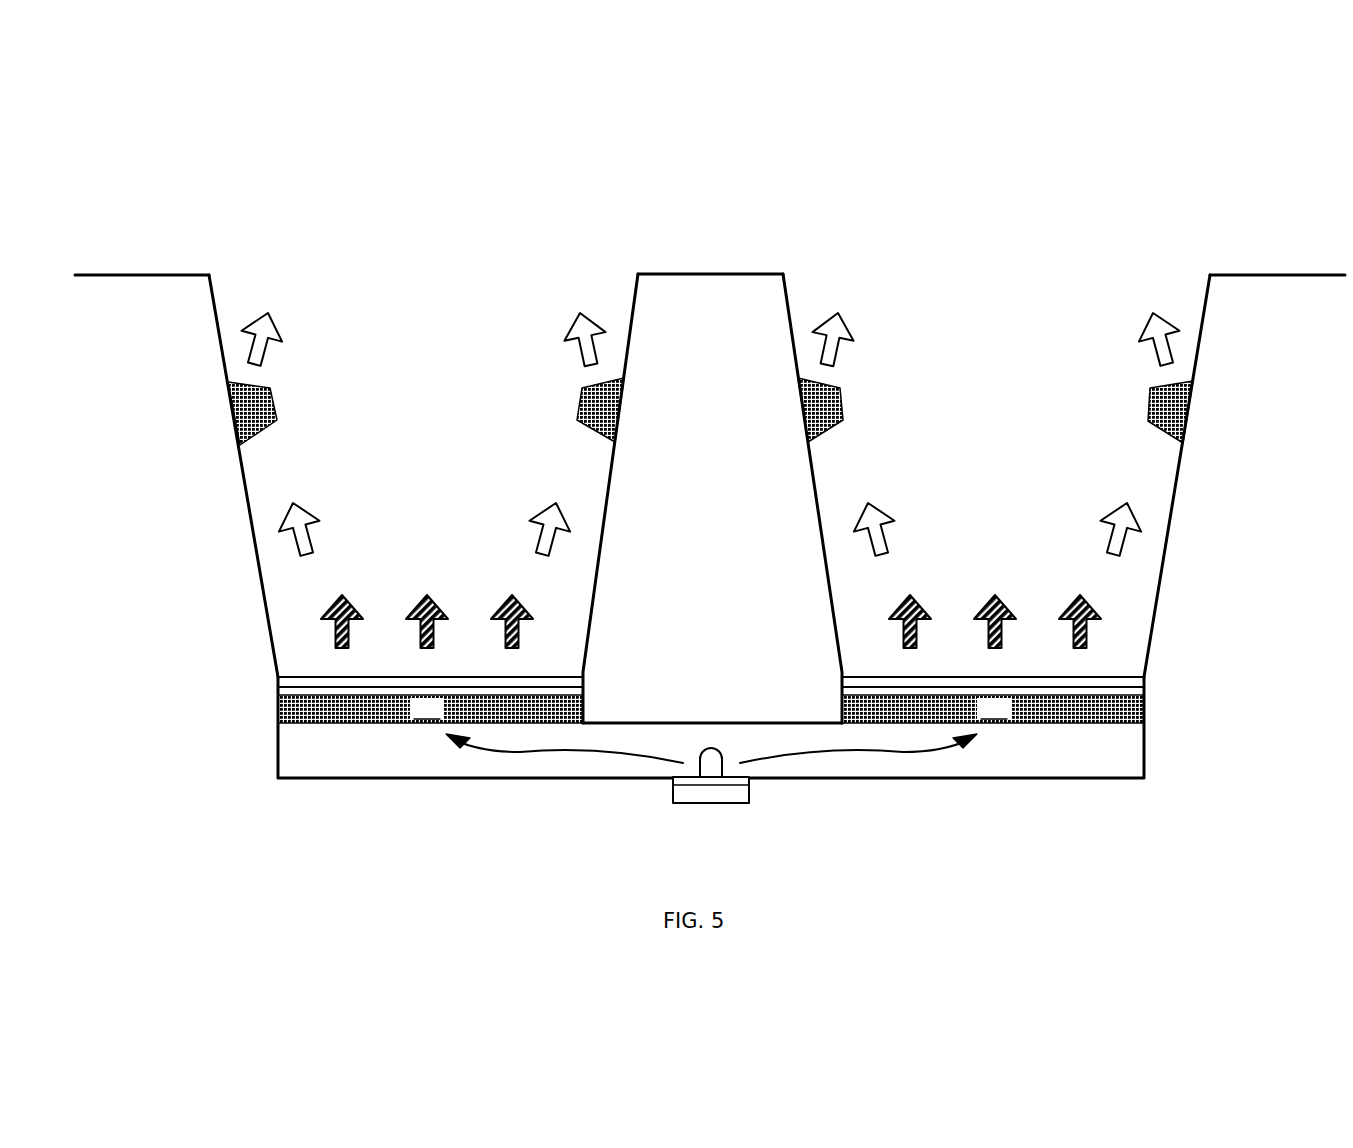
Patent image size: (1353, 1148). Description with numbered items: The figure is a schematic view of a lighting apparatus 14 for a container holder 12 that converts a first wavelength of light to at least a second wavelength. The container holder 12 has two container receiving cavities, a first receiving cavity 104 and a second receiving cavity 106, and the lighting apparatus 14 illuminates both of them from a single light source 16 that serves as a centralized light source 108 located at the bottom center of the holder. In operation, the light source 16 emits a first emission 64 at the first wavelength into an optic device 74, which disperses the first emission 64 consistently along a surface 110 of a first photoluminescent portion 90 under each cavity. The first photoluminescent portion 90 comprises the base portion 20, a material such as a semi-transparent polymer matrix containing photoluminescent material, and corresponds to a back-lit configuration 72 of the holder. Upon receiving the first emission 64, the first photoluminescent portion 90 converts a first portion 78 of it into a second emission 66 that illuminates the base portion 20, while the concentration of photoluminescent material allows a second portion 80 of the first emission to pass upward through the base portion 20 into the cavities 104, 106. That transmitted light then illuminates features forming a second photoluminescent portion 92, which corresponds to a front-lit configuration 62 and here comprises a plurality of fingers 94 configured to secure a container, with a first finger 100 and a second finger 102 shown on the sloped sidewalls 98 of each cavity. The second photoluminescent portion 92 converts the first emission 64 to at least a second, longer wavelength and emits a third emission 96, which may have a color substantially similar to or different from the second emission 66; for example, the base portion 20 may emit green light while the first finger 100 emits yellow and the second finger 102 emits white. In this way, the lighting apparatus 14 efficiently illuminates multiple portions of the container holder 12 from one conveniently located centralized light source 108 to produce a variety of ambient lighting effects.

The container holder 12 is at (710, 174).
The lighting apparatus 14 is at (892, 125).
The light source 16 is at (753, 799).
The base portion 20 is at (710, 709).
The front-lit configuration 62 is at (1224, 562).
The first emission 64 is at (556, 753).
The second emission 66 is at (702, 646).
The back-lit configuration 72 is at (1230, 661).
The optic device 74 is at (1086, 764).
The first portion of the first emission 78 is at (505, 650).
The second portion of the first emission 80 is at (297, 537).
The first photoluminescent portion 90 is at (307, 713).
The second photoluminescent portion 92 is at (700, 427).
The plurality of fingers 94 is at (233, 420).
The third emission 96 is at (258, 345).
The sidewall 98 is at (250, 482).
The first finger 100 is at (265, 405).
The second finger 102 is at (585, 405).
The first receiving cavity 104 is at (358, 262).
The second receiving cavity 106 is at (923, 262).
The centralized light source 108 is at (723, 797).
The surface 110 is at (373, 725).